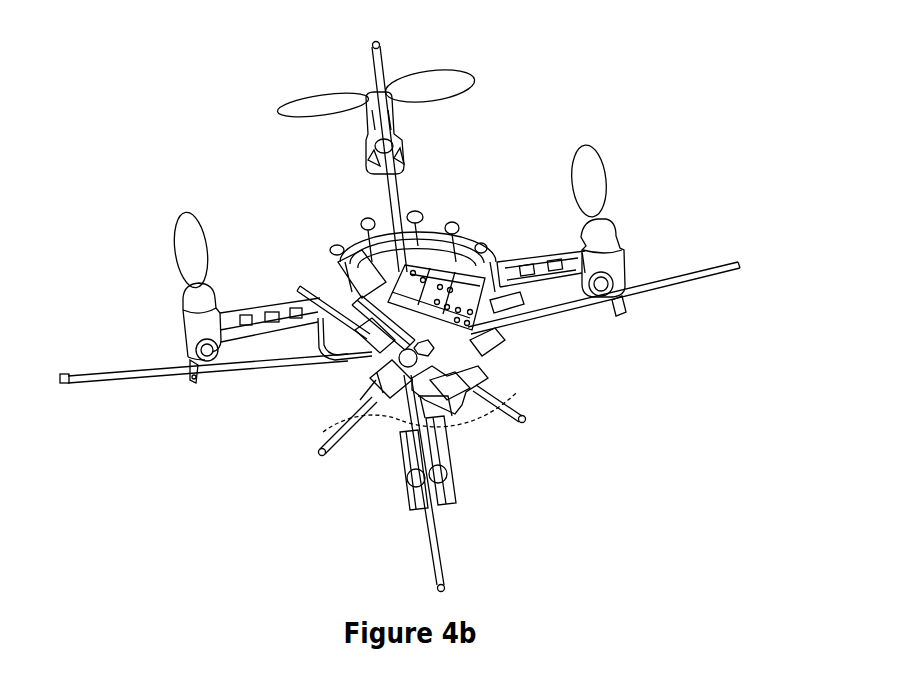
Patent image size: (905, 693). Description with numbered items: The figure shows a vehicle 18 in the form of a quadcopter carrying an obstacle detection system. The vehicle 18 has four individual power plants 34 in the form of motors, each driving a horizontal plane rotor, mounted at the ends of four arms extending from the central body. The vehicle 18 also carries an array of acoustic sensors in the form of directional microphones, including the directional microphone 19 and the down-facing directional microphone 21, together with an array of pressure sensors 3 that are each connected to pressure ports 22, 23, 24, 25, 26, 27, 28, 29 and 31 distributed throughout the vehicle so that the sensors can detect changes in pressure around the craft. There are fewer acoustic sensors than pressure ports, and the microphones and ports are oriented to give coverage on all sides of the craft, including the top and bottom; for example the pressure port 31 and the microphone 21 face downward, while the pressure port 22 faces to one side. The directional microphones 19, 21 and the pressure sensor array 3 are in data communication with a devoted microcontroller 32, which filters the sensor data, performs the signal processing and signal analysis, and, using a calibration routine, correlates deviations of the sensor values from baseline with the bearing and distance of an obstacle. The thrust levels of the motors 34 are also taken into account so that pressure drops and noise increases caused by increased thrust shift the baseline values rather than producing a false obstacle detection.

The vehicle 18 is at (641, 442).
The directional microphone 19 is at (360, 236).
The directional microphone 21 is at (402, 346).
The pressure port 22 is at (308, 290).
The pressure port 23 is at (378, 53).
The pressure port 24 is at (500, 250).
The pressure port 25 is at (722, 263).
The pressure port 26 is at (520, 418).
The pressure port 27 is at (437, 580).
The pressure port 28 is at (320, 448).
The pressure port 29 is at (82, 377).
The pressure sensor array 3 is at (421, 271).
The pressure port 31 is at (423, 352).
The microcontroller 32 is at (417, 278).
The power plant 34 is at (370, 108).